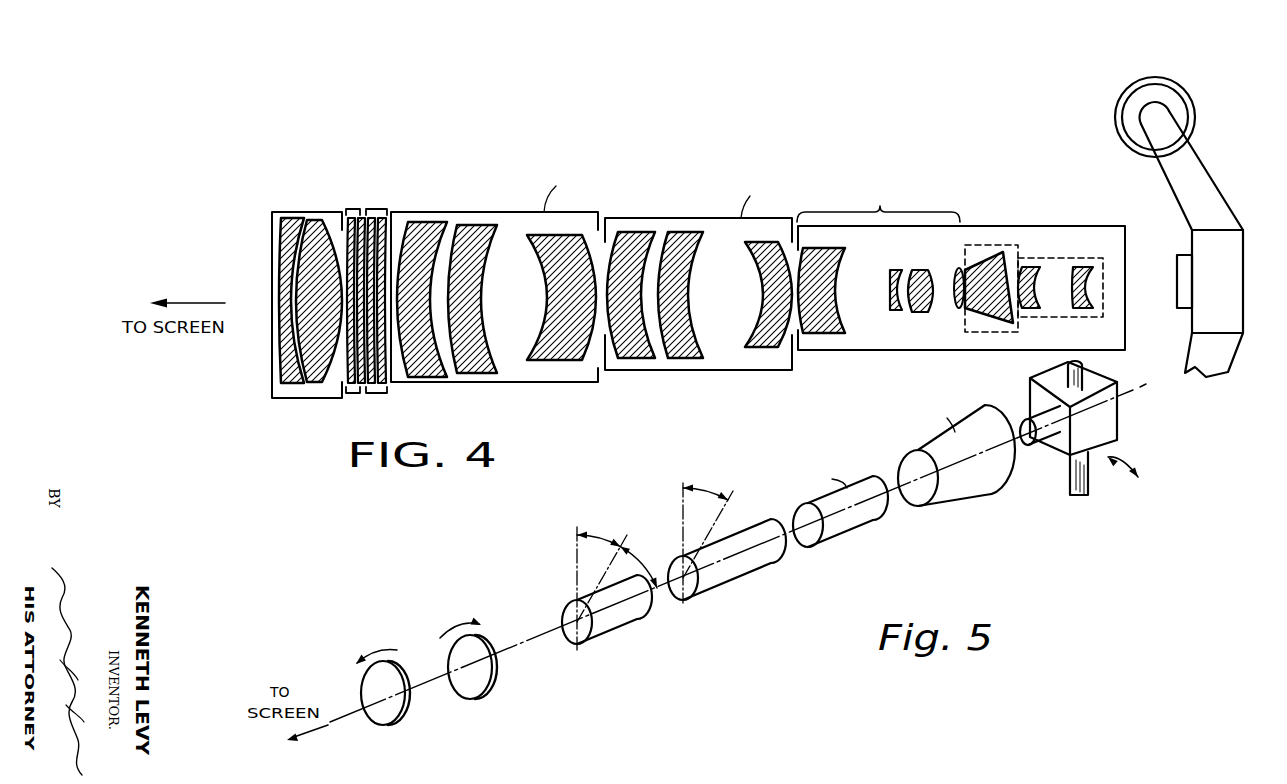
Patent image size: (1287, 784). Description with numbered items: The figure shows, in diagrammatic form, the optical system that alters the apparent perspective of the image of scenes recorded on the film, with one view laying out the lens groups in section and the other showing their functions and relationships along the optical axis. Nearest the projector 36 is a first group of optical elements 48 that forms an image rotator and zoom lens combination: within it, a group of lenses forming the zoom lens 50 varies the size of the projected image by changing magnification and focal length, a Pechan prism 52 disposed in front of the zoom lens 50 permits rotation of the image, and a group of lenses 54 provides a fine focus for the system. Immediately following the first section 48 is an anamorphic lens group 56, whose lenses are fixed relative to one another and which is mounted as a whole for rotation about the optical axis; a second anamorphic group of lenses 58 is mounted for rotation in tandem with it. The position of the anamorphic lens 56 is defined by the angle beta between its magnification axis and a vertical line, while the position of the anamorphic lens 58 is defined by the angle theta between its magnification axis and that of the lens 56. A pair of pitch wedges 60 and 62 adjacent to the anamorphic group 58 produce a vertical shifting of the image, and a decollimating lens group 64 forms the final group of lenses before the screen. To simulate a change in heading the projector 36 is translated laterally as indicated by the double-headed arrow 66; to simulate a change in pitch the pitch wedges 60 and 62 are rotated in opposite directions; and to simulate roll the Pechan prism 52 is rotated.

In FIG. 4, the projector 36 is at (1220, 190).
In FIG. 5, the projector 36 is at (1027, 422).
In FIG. 4, the first group of optical elements 48 is at (1026, 226).
In FIG. 4, the zoom lens 50 is at (878, 261).
In FIG. 5, the zoom lens 50 is at (838, 537).
In FIG. 4, the Pechan prism 52 is at (962, 253).
In FIG. 5, the Pechan prism 52 is at (935, 503).
In FIG. 4, the fine focus lens group 54 is at (1040, 258).
In FIG. 4, the anamorphic lens group 56 is at (664, 218).
In FIG. 5, the anamorphic lens group 56 is at (725, 582).
In FIG. 4, the anamorphic lens group 58 is at (426, 212).
In FIG. 5, the anamorphic lens group 58 is at (612, 630).
In FIG. 4, the pitch wedge 60 is at (372, 209).
In FIG. 5, the pitch wedge 60 is at (480, 693).
In FIG. 4, the pitch wedge 62 is at (354, 209).
In FIG. 5, the pitch wedge 62 is at (392, 725).
In FIG. 4, the decollimating lens group 64 is at (288, 210).
In FIG. 5, the double-headed arrow 66 is at (1117, 472).